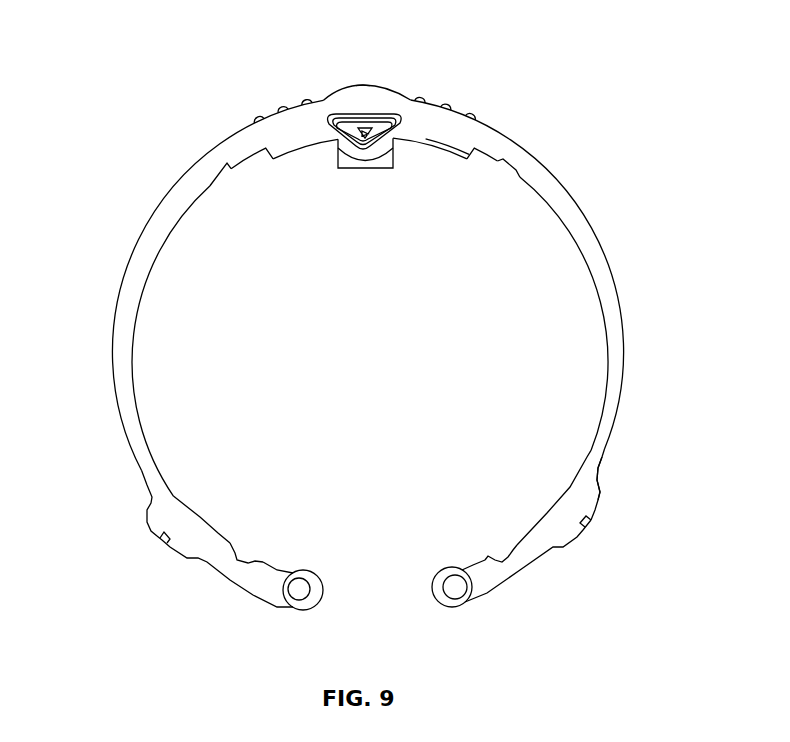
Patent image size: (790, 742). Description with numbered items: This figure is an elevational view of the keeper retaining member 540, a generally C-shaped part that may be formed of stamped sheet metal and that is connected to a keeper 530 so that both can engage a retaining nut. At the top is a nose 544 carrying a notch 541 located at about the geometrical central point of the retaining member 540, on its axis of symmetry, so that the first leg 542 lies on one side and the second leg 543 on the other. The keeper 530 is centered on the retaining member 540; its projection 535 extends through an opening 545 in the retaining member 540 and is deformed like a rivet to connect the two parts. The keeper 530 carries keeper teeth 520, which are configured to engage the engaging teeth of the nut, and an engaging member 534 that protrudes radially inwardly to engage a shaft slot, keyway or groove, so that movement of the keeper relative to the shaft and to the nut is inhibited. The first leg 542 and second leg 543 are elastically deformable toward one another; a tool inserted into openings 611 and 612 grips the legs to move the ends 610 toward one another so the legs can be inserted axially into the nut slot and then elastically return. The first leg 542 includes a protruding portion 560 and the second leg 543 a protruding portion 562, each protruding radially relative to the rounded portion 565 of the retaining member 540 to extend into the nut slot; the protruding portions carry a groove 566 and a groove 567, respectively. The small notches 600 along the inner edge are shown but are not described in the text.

The keeper teeth 520 is at (472, 117).
The keeper 530 is at (443, 152).
The engaging member 534 is at (357, 170).
The projection 535 is at (367, 127).
The keeper retaining member 540 is at (583, 213).
The notch 541 is at (363, 92).
The first leg 542 is at (114, 353).
The second leg 543 is at (625, 330).
The nose 544 is at (333, 92).
The opening 545 is at (330, 140).
The protruding portion 560 is at (150, 508).
The protruding portion 562 is at (602, 500).
The rounded portion 565 is at (237, 582).
The groove 566 is at (163, 537).
The groove 567 is at (587, 525).
The notch 600 is at (222, 181).
The ends 610 is at (297, 610).
The opening 611 is at (298, 588).
The opening 612 is at (454, 587).